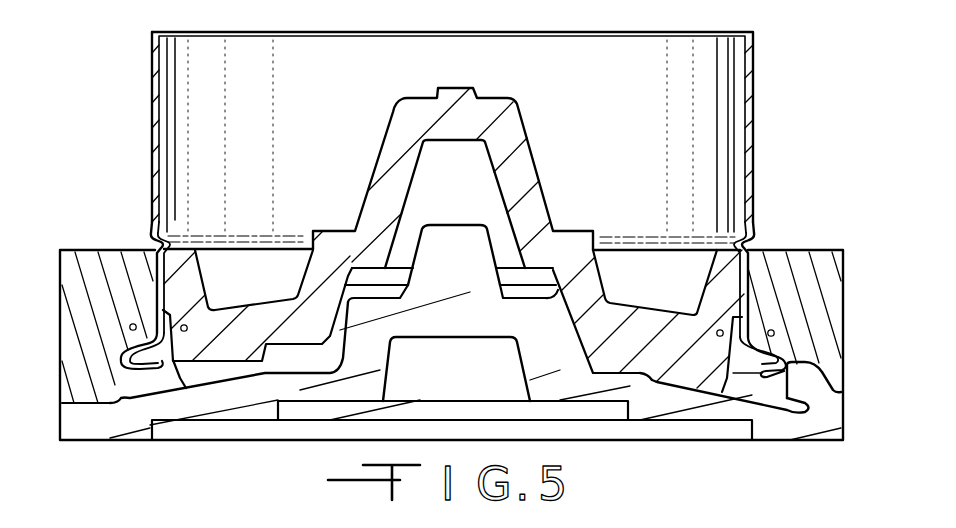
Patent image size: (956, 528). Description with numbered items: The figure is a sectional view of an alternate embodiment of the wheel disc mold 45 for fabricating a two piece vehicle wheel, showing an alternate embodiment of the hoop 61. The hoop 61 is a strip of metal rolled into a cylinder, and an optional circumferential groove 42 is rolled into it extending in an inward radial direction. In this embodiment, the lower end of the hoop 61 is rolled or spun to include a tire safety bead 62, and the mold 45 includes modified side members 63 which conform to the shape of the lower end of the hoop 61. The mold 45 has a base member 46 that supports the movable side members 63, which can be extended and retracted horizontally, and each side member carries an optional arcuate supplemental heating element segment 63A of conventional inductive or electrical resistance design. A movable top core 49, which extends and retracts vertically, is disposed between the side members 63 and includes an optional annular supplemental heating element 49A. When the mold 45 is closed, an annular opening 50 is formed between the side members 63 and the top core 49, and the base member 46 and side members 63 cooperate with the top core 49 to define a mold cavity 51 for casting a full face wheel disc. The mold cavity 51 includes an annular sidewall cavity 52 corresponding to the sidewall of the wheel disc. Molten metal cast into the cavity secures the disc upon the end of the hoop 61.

The circumferential groove 42 is at (738, 238).
The wheel disc mold 45 is at (110, 217).
The base member 46 is at (108, 422).
The top core 49 is at (522, 172).
The supplemental heating element 49A is at (188, 327).
The annular opening 50 is at (170, 232).
The mold cavity 51 is at (468, 193).
The sidewall cavity 52 is at (143, 427).
The hoop 61 is at (755, 145).
The tire safety bead 62 is at (841, 392).
The side members 63 is at (60, 328).
The supplemental heating element segment 63A is at (132, 323).